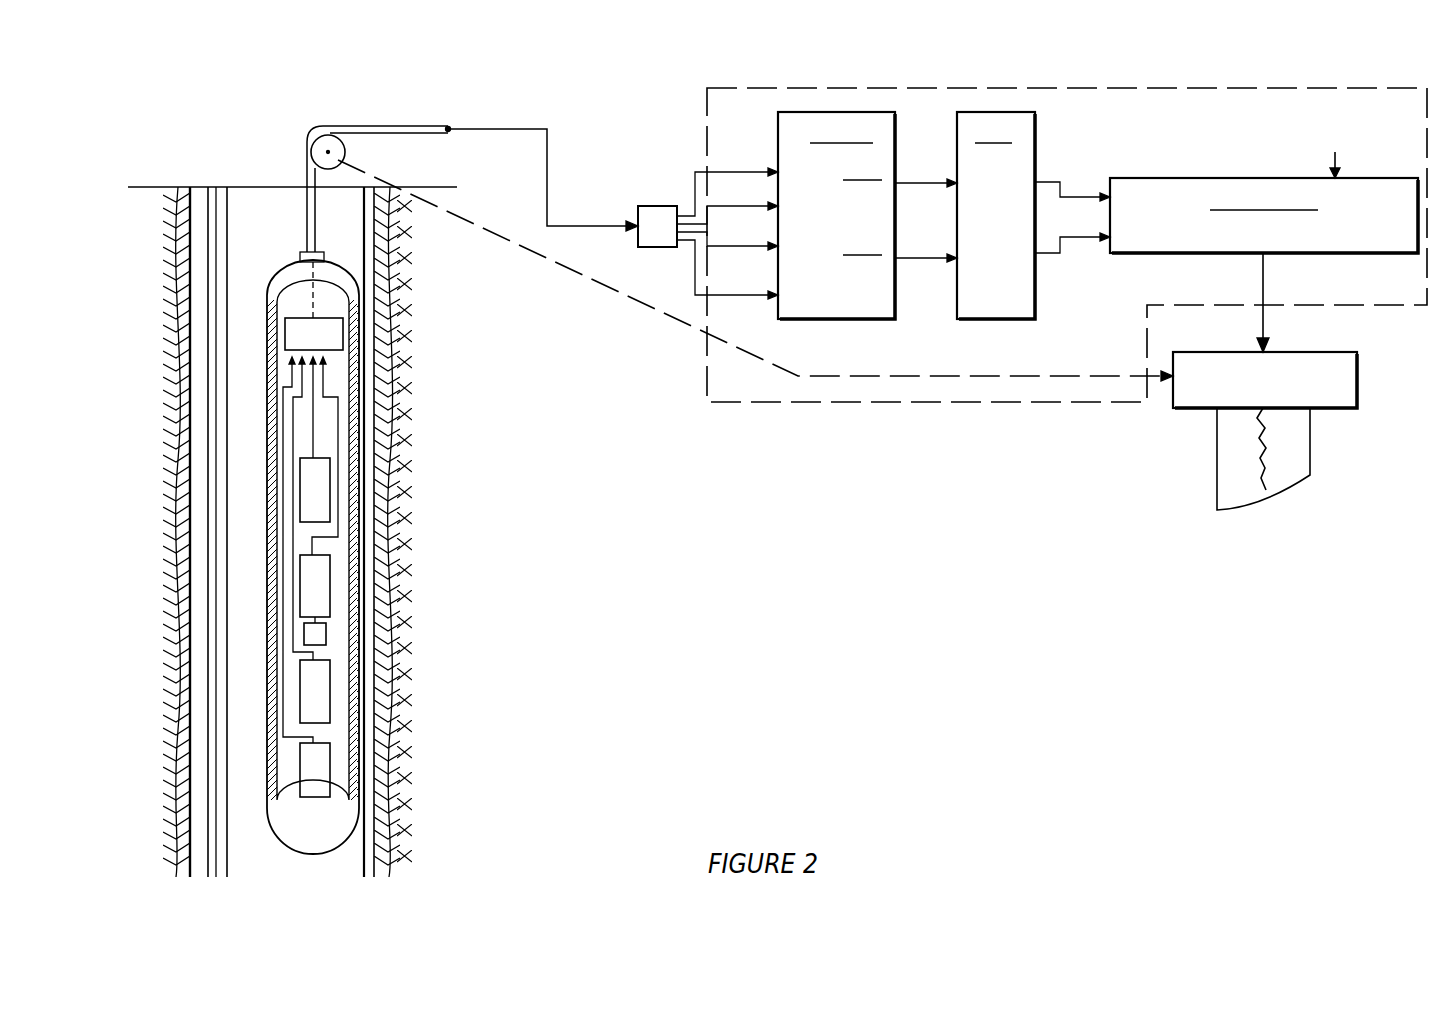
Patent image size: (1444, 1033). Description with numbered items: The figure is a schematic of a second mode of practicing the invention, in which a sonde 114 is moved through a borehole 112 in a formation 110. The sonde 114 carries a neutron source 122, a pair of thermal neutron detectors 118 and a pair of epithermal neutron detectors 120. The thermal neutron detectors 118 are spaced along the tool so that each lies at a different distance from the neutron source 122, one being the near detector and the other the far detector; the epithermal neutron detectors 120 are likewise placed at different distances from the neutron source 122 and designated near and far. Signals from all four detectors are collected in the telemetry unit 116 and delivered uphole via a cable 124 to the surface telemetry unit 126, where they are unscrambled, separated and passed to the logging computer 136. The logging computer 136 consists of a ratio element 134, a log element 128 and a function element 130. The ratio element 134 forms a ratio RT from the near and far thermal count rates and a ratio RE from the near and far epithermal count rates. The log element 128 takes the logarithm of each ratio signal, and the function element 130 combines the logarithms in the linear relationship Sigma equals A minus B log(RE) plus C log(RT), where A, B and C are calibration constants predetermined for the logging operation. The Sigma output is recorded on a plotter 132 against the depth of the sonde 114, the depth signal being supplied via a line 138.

The formation 110 is at (148, 230).
The borehole 112 is at (280, 230).
The sonde 114 is at (353, 290).
The telemetry unit 116 is at (340, 335).
The thermal neutron detectors 118 is at (326, 585).
The epithermal neutron detectors 120 is at (326, 775).
The neutron source 122 is at (322, 637).
The cable 124 is at (307, 162).
The surface telemetry unit 126 is at (660, 206).
The log element 128 is at (1036, 135).
The function element 130 is at (1150, 178).
The plotter 132 is at (1340, 352).
The ratio element 134 is at (895, 133).
The logging computer 136 is at (1108, 402).
The line 138 is at (953, 376).